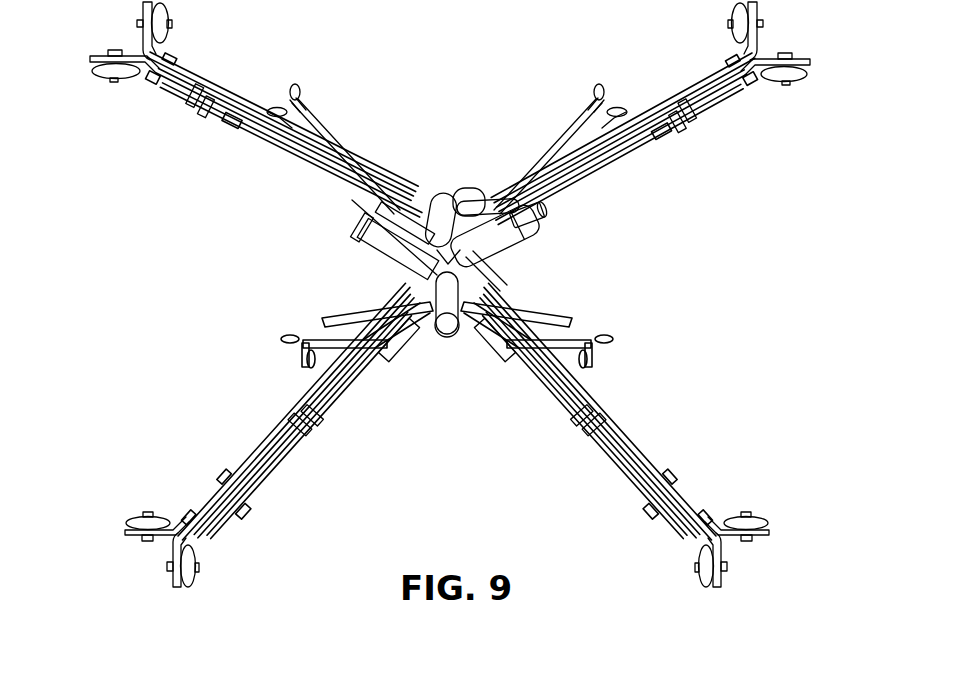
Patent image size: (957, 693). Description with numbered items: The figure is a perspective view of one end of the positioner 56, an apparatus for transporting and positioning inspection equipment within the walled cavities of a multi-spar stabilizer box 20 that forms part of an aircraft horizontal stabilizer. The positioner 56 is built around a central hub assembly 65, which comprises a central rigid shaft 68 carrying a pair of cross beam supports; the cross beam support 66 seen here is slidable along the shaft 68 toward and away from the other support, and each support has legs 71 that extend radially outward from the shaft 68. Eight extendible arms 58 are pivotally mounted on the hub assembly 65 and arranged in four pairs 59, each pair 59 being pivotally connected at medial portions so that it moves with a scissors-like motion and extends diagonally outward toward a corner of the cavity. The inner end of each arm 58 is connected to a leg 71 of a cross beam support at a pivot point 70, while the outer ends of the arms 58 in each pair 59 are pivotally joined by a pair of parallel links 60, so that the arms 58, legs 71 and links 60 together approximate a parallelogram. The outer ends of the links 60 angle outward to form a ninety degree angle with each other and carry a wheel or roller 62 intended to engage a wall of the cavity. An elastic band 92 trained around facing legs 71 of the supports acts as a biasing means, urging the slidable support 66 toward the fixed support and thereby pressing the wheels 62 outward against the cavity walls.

The multi-spar stabilizer box 20 is at (573, 138).
The positioner 56 is at (811, 260).
The extendible arm 58 is at (262, 150).
The pair of arms 59 is at (445, 293).
The parallel link 60 is at (163, 80).
The wheel or roller 62 is at (160, 36).
The central hub assembly 65 is at (372, 242).
The cross beam support 66 is at (393, 358).
The central rigid shaft 68 is at (354, 237).
The pivot point 70 is at (530, 251).
The leg 71 is at (400, 210).
The elastic band 92 is at (468, 332).